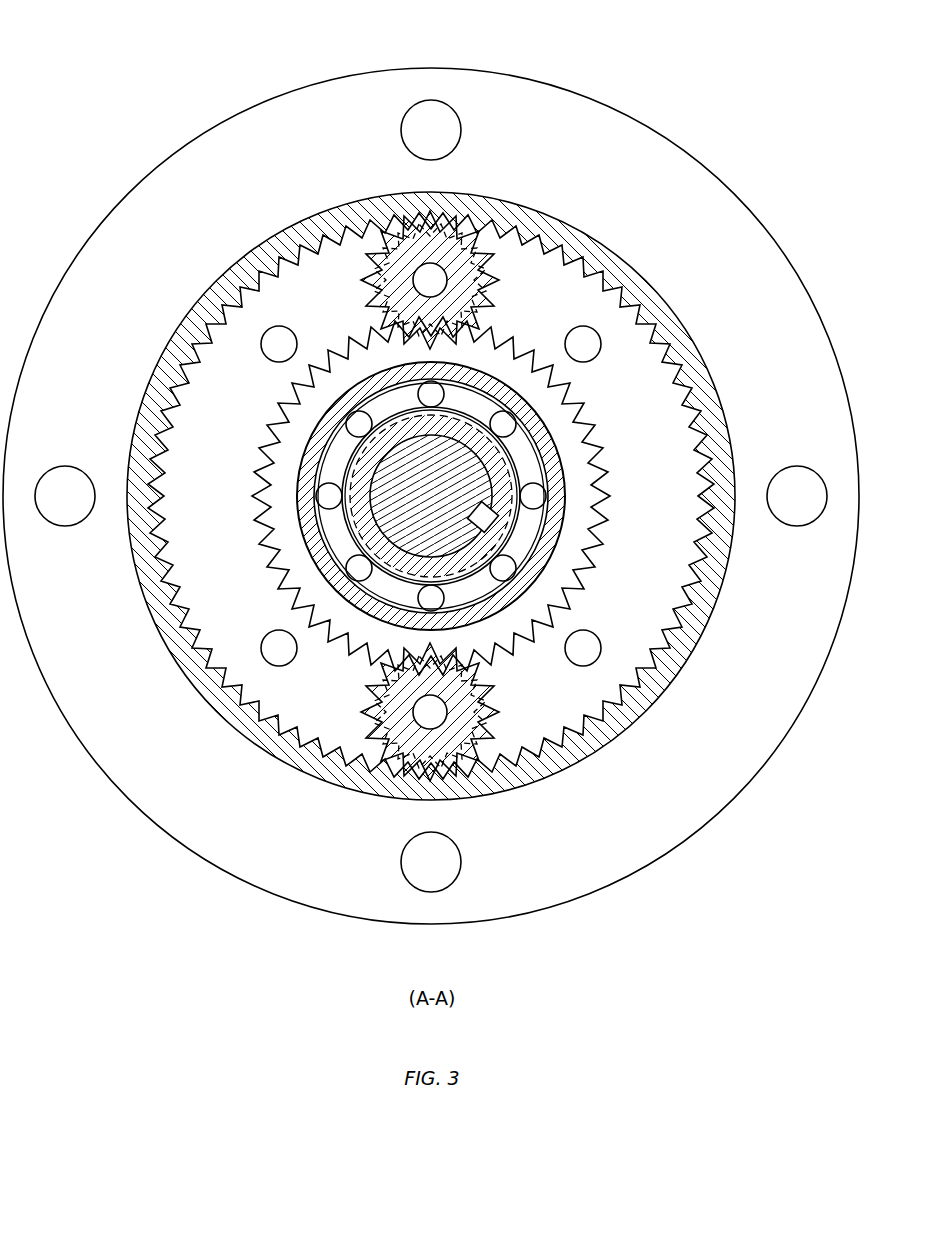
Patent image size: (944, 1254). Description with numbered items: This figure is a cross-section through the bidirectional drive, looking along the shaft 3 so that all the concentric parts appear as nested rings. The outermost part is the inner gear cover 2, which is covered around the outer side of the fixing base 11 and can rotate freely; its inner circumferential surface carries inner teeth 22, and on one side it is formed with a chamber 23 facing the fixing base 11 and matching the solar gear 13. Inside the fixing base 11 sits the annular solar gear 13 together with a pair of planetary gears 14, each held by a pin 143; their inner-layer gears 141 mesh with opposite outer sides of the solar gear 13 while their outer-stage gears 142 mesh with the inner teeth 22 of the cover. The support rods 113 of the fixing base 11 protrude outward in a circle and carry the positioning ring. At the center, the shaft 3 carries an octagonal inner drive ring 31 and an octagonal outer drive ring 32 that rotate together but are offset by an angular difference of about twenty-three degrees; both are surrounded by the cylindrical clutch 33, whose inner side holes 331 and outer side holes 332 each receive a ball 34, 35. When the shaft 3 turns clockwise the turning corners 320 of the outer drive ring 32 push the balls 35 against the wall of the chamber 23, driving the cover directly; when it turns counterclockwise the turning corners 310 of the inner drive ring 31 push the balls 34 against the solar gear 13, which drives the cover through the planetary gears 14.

The inner gear cover 2 is at (497, 108).
The fixing base 11 is at (648, 357).
The support rods 113 is at (598, 346).
The solar gear 13 is at (570, 434).
The planetary gears 14 is at (459, 463).
The inner-layer gears 141 is at (355, 246).
The outer-stage gears 142 is at (472, 256).
The pins 143 is at (380, 248).
The inner teeth 22 is at (592, 272).
The chamber 23 is at (545, 468).
The shaft 3 is at (490, 501).
The inner drive ring 31 is at (424, 461).
The turning corners 310 is at (370, 412).
The outer drive ring 32 is at (443, 418).
The turning corners 320 is at (492, 413).
The cylindrical clutch 33 is at (338, 450).
The inner side holes 331 is at (357, 496).
The outer side holes 332 is at (310, 462).
The balls 34 is at (358, 496).
The balls 35 is at (316, 496).